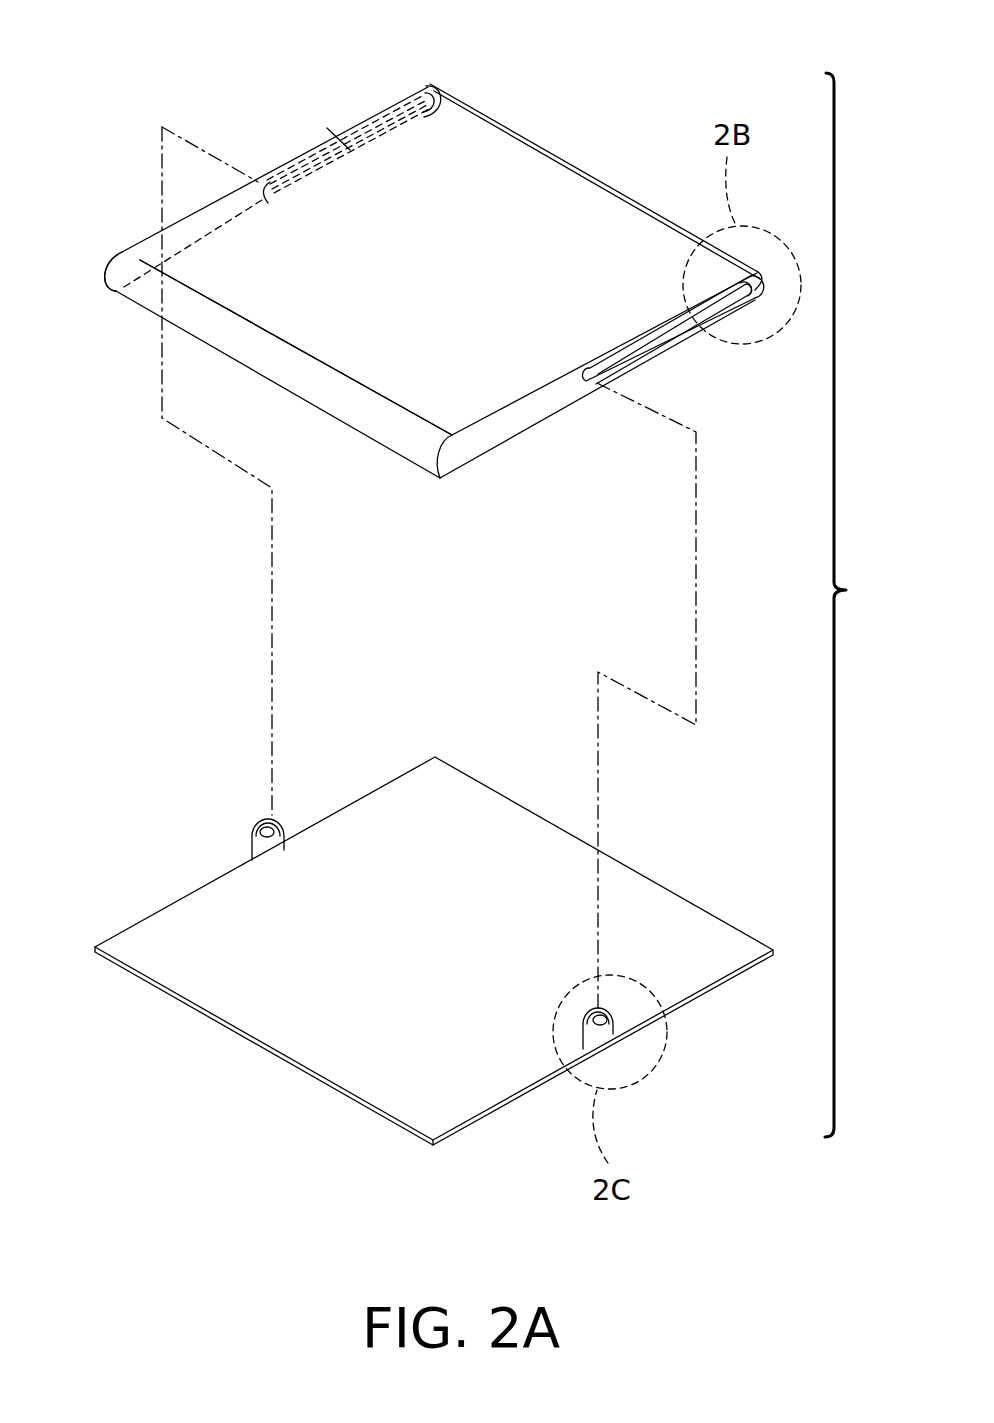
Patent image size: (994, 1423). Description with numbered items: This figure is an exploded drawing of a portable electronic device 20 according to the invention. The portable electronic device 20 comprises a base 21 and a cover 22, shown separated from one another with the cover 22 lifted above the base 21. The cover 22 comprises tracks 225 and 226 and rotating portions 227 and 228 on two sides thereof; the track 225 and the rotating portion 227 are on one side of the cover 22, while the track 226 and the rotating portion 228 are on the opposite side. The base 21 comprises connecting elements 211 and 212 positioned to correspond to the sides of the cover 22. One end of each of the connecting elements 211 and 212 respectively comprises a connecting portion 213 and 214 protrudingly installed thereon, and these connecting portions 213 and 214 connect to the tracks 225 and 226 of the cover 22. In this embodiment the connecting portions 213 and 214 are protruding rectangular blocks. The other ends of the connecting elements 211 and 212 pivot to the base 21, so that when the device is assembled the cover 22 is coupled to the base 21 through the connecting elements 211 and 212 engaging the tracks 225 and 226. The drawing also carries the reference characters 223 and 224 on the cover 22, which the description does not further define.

The portable electronic device 20 is at (859, 605).
The base 21 is at (428, 963).
The cover 22 is at (472, 292).
The connecting element 211 is at (602, 1038).
The connecting element 212 is at (252, 837).
The connecting portion 213 is at (620, 1025).
The connecting portion 214 is at (285, 837).
The front side edge of cover 223 is at (522, 418).
The left end of cover edge 224 is at (142, 242).
The track 225 is at (672, 337).
The track 226 is at (340, 150).
The rotating portion 227 is at (748, 289).
The rotating portion 228 is at (410, 97).